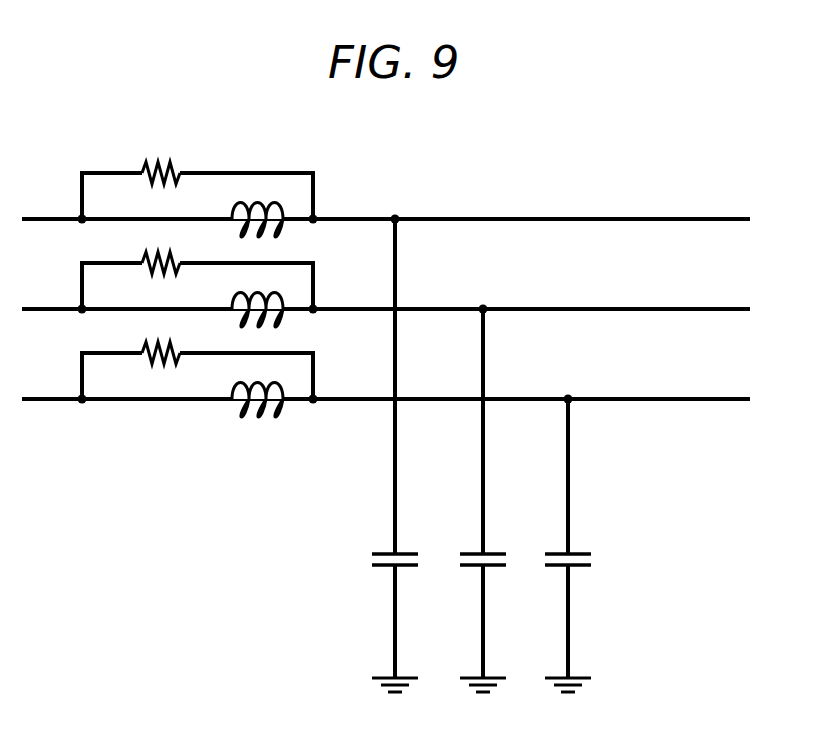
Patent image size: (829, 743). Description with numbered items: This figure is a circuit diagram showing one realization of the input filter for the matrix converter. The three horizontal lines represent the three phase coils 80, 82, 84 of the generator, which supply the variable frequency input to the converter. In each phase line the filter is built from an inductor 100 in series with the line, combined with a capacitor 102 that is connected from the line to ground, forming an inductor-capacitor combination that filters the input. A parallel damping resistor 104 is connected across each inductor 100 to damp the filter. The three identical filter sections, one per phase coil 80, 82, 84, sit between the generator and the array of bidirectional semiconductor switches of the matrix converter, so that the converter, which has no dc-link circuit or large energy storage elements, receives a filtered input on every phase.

The phase coil 80 is at (733, 220).
The phase coil 82 is at (733, 310).
The phase coil 84 is at (733, 400).
The inductor 100 is at (250, 422).
The capacitor 102 is at (590, 565).
The parallel damping resistor 104 is at (143, 350).